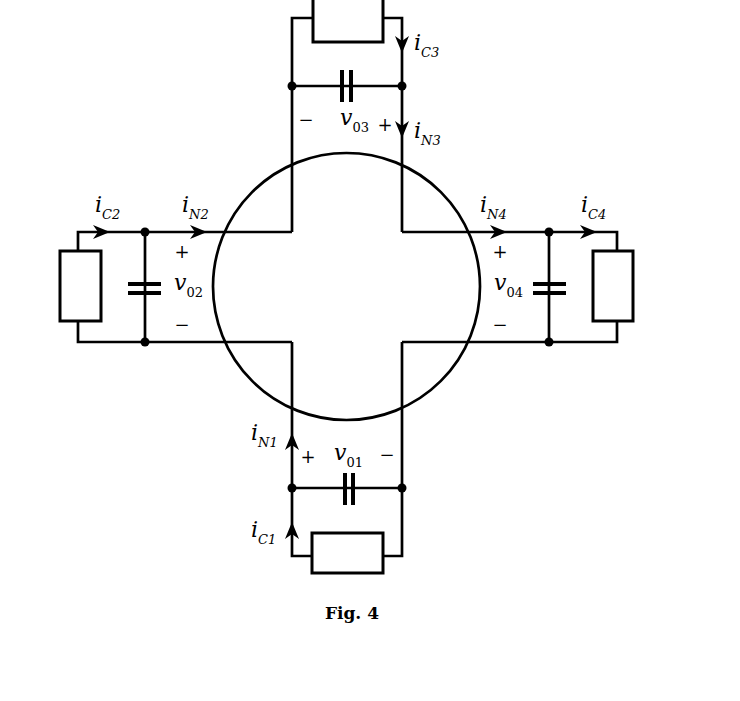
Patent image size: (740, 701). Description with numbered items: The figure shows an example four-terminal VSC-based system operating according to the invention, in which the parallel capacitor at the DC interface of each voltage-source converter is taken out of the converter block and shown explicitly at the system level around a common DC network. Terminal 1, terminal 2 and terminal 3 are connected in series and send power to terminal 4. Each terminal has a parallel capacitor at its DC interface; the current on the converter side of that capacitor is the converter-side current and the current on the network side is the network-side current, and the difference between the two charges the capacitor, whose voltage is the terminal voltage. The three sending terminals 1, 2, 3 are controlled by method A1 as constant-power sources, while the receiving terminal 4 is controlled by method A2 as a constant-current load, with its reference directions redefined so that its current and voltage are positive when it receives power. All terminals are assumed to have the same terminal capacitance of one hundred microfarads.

The terminal 1 is at (347, 553).
The terminal 2 is at (80, 286).
The terminal 3 is at (348, 21).
The terminal 4 is at (613, 286).